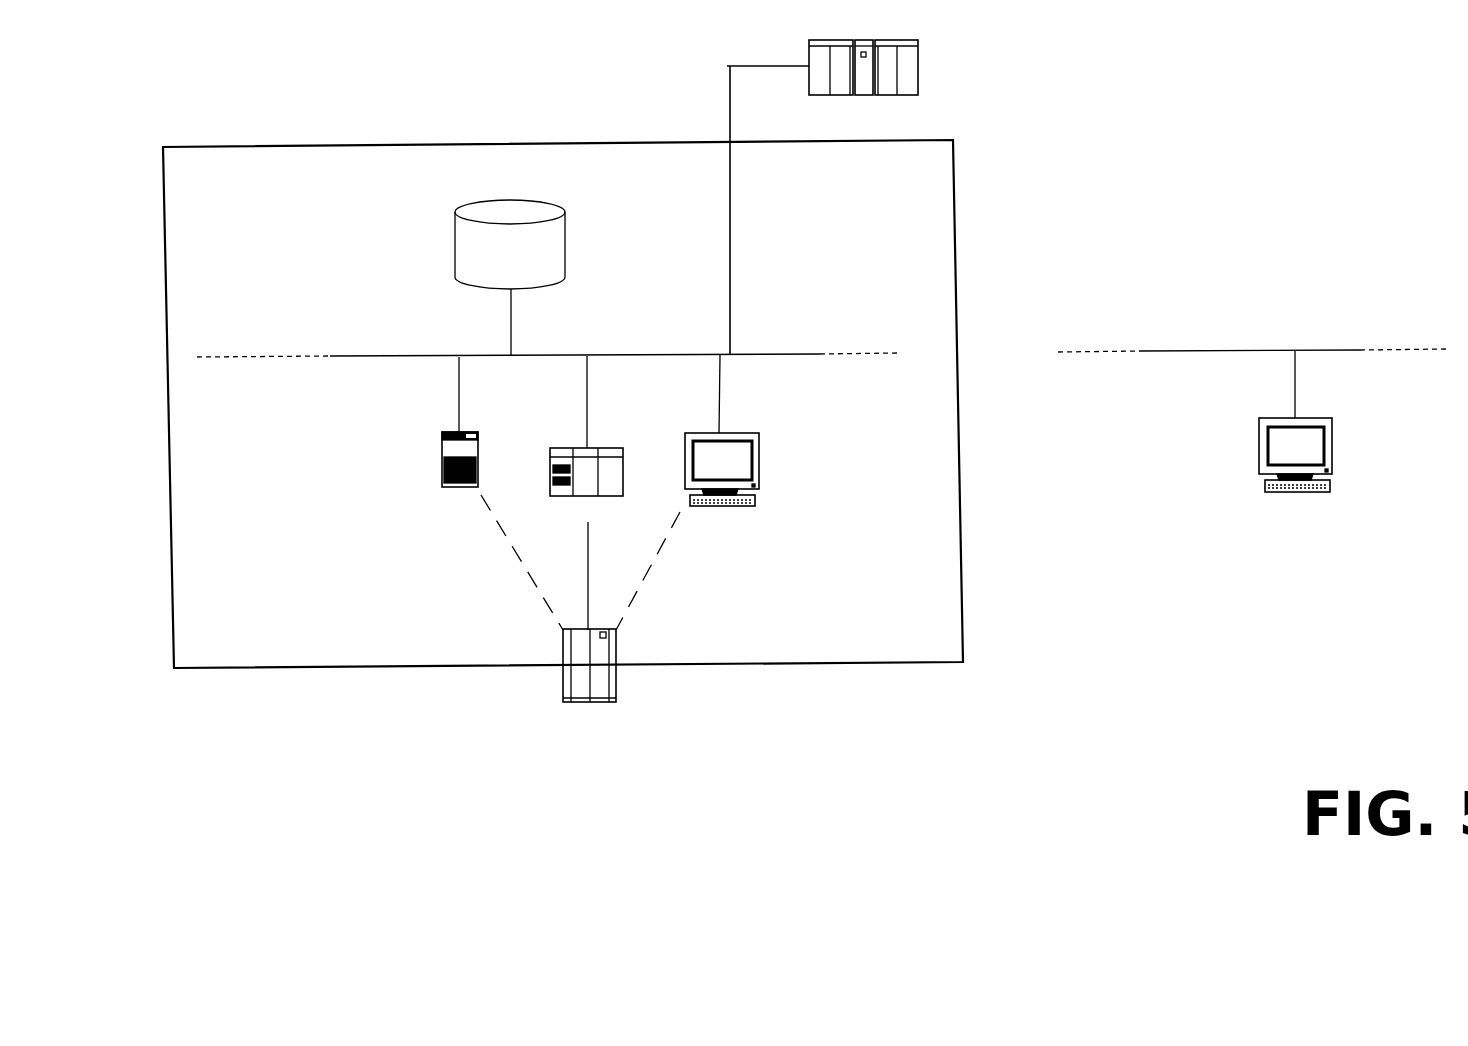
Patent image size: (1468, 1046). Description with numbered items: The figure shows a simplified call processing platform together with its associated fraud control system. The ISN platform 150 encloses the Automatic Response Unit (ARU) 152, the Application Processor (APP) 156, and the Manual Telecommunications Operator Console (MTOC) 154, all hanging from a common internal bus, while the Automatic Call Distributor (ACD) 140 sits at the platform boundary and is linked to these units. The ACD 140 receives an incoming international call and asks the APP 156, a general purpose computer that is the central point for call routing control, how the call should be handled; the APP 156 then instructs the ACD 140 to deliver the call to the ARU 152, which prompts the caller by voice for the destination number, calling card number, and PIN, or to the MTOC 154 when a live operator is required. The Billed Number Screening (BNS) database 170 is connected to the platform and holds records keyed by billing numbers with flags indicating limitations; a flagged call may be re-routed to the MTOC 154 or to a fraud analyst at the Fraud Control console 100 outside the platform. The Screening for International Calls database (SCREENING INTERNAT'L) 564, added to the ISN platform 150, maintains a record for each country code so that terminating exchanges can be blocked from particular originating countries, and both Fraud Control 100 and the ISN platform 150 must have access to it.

The fraud console 100 is at (1333, 456).
The ACD 140 is at (562, 686).
The ISN platform 150 is at (634, 141).
The Automatic Response Unit 152 is at (440, 448).
The Manual Telecommunications Operator Console 154 is at (760, 456).
The Application Processor 156 is at (567, 448).
The Billed Number Screening database 170 is at (918, 68).
The Screening for International Calls database 564 is at (488, 200).